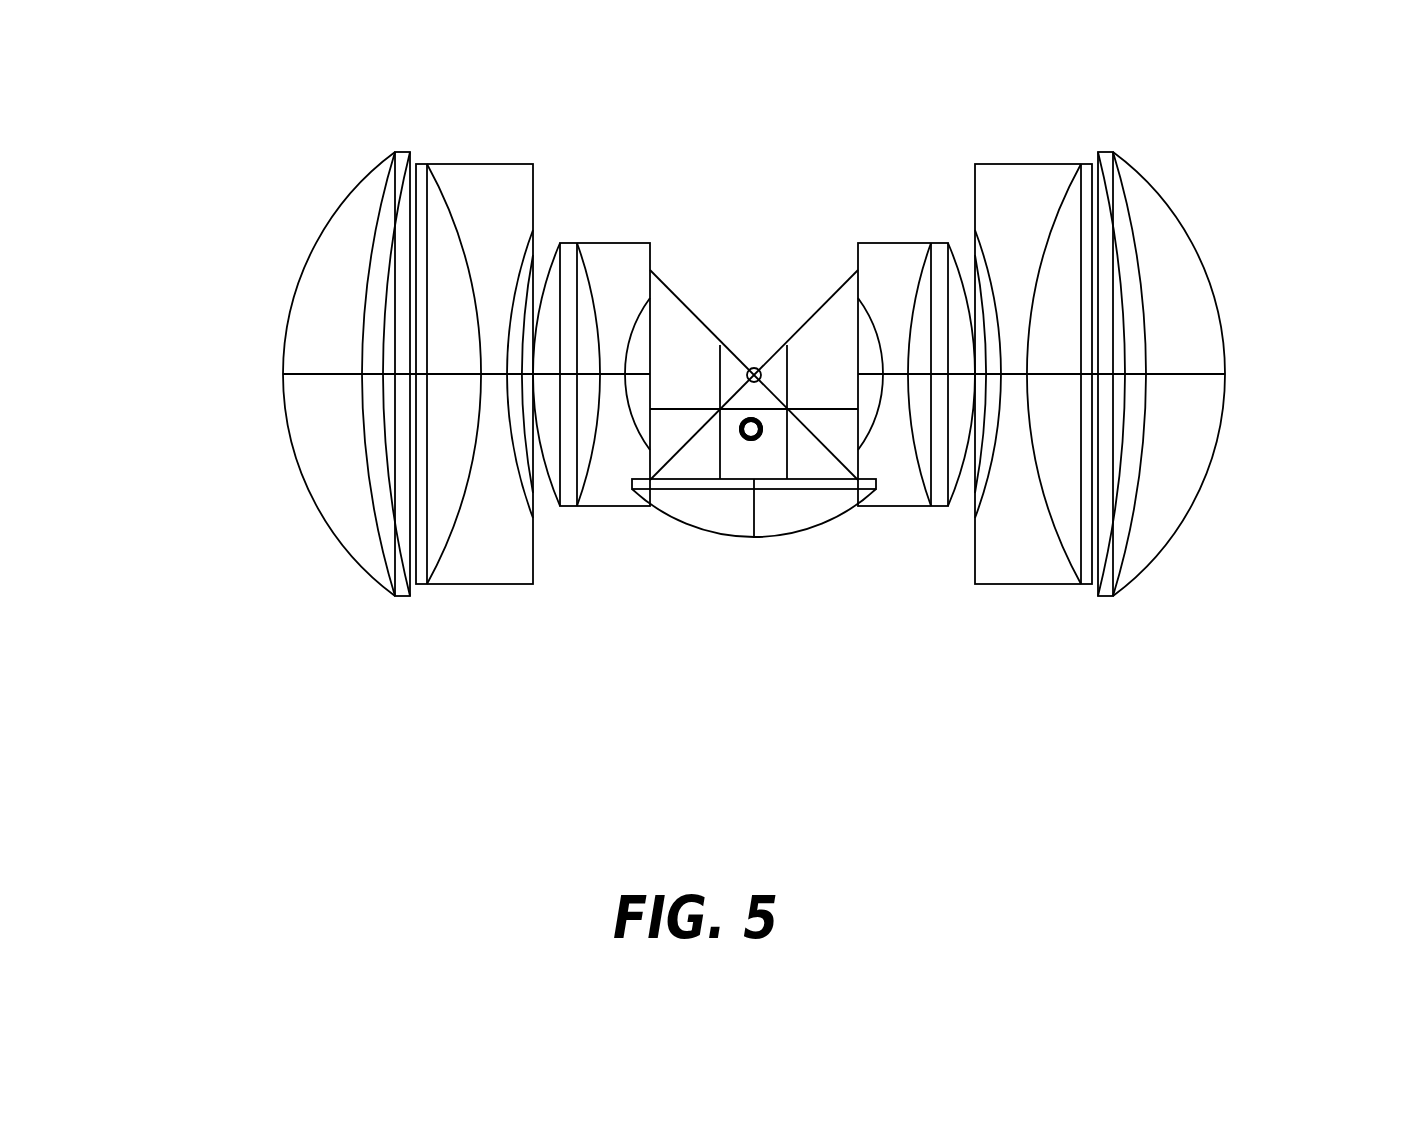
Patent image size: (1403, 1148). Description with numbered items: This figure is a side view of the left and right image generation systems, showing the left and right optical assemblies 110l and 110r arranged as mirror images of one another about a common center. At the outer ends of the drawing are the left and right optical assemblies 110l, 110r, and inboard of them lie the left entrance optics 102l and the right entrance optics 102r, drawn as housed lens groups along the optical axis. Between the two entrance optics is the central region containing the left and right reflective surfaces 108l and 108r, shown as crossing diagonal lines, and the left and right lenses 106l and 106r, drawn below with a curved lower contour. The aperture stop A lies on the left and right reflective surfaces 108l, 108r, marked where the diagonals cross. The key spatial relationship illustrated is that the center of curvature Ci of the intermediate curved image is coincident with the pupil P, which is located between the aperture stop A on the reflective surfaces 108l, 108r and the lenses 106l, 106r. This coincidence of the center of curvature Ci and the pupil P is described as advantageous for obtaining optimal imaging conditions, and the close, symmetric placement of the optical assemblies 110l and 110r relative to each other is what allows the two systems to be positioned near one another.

The right optical assembly 110r is at (340, 154).
The left optical assembly 110l is at (1227, 217).
The right entrance optics 102r is at (427, 583).
The left entrance optics 102l is at (1102, 595).
The right reflective surface 108r is at (697, 312).
The left reflective surface 108l is at (815, 312).
The left lens 106l is at (754, 543).
The right lens 106r is at (762, 540).
The aperture stop A is at (750, 366).
The center of curvature of intermediate curved image Ci is at (753, 443).
The pupil P is at (836, 529).